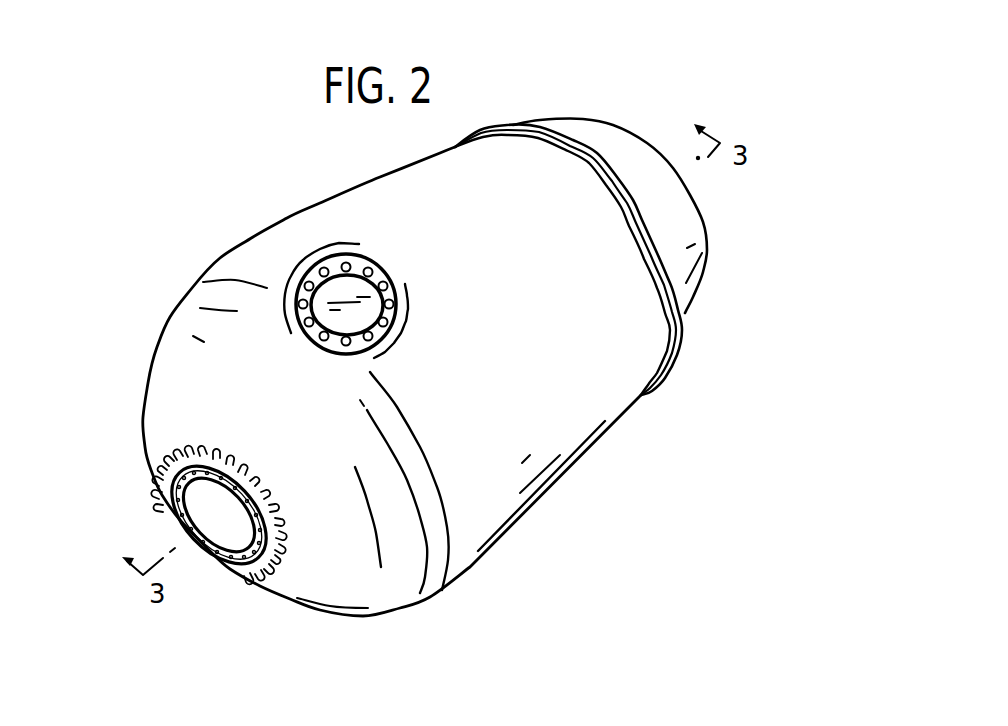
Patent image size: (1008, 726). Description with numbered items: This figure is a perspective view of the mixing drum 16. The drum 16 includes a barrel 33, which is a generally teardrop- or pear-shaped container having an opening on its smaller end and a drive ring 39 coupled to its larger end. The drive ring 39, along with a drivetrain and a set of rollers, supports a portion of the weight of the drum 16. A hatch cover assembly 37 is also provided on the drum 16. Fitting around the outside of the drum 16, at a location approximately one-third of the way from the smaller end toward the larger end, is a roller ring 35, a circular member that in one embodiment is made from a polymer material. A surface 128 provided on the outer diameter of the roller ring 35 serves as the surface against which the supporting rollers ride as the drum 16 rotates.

The mixing drum 16 is at (288, 217).
The roller ring 35 is at (513, 127).
The surface 128 is at (590, 162).
The barrel 33 is at (567, 403).
The hatch cover assembly 37 is at (330, 307).
The drive ring 39 is at (193, 513).